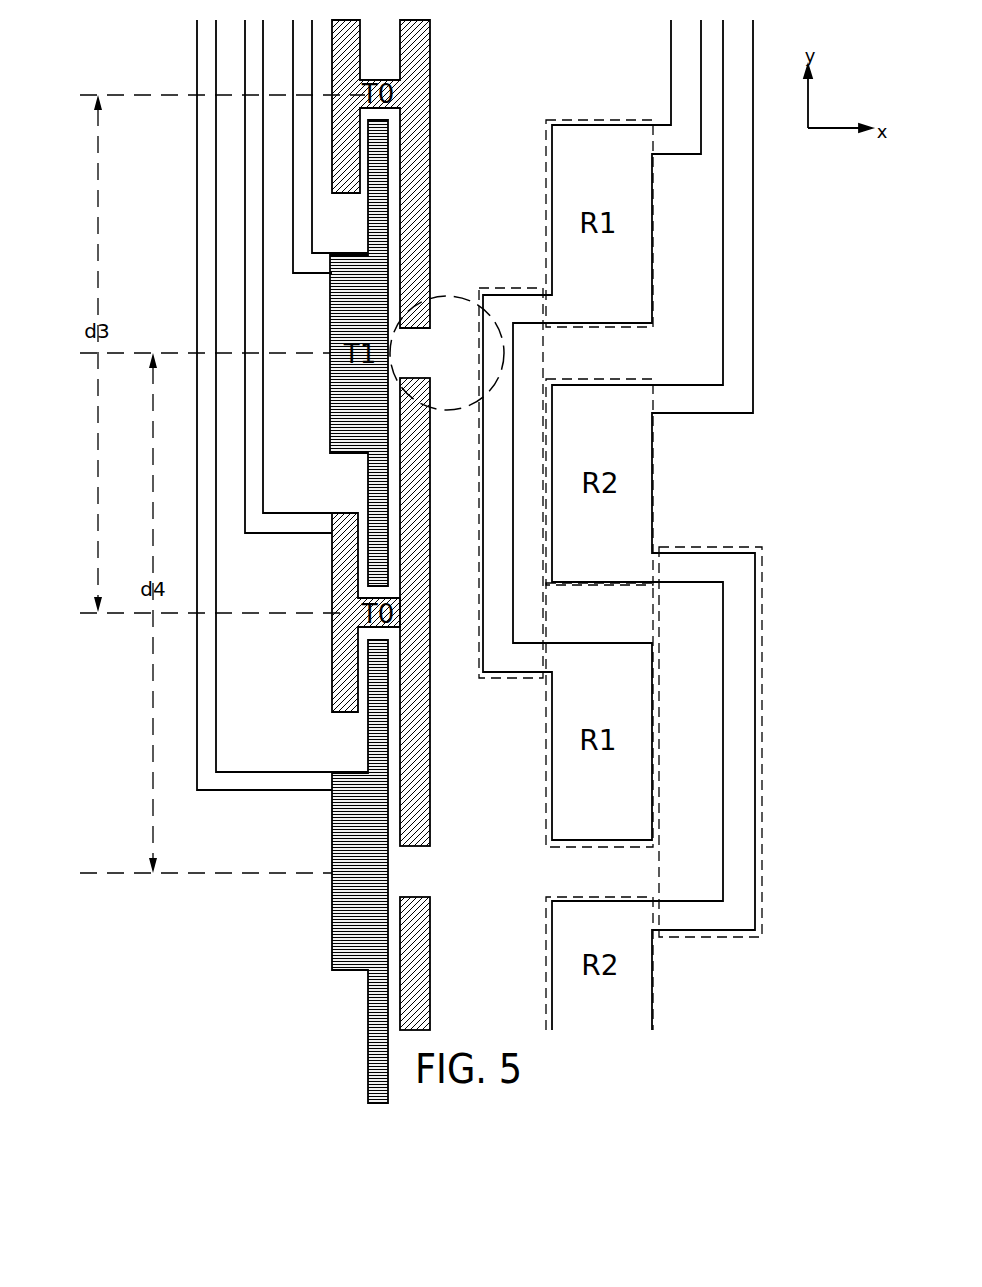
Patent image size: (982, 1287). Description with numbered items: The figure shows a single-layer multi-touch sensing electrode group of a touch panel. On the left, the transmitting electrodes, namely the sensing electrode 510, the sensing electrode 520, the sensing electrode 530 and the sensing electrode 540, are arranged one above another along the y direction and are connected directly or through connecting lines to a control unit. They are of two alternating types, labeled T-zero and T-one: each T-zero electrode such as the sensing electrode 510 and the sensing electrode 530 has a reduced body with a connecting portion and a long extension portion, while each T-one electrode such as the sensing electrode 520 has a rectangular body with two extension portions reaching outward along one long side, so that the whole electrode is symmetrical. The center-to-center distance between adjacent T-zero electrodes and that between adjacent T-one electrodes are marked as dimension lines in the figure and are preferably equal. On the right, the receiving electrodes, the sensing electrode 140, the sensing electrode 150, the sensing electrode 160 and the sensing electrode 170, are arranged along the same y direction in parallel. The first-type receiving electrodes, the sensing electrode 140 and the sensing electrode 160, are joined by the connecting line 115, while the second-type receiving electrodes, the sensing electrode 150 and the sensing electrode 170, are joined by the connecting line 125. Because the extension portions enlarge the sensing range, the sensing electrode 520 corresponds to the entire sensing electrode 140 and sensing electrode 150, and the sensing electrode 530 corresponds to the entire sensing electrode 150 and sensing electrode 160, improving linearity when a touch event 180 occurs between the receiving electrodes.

The sensing electrode 510 is at (430, 152).
The sensing electrode 520 is at (332, 414).
The sensing electrode 530 is at (334, 686).
The sensing electrode 540 is at (332, 948).
The touch event 180 is at (440, 296).
The connecting line 115 is at (527, 289).
The sensing electrode 140 is at (616, 121).
The sensing electrode 150 is at (618, 380).
The sensing electrode 160 is at (618, 640).
The sensing electrode 170 is at (618, 897).
The connecting line 125 is at (695, 548).